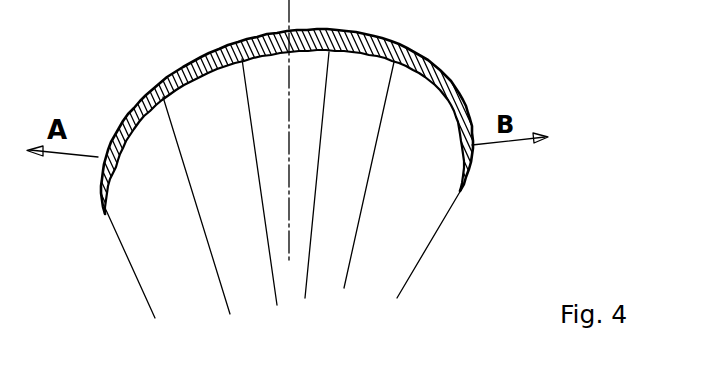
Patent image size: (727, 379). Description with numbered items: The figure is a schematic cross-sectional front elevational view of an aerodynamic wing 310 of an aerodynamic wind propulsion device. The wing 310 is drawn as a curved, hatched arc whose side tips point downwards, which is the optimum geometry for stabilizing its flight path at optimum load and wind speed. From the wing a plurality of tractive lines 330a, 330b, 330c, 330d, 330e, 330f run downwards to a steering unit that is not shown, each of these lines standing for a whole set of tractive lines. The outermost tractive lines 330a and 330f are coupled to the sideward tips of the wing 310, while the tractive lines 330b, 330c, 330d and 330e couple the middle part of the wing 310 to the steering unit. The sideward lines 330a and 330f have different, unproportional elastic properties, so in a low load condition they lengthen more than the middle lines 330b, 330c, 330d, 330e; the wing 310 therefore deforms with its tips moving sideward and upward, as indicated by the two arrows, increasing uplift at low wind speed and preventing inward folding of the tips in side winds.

The aerodynamic wing 310 is at (217, 60).
The tractive line 330a is at (138, 283).
The tractive line 330b is at (203, 230).
The tractive line 330c is at (262, 199).
The tractive line 330d is at (318, 177).
The tractive line 330e is at (366, 198).
The tractive line 330f is at (428, 247).